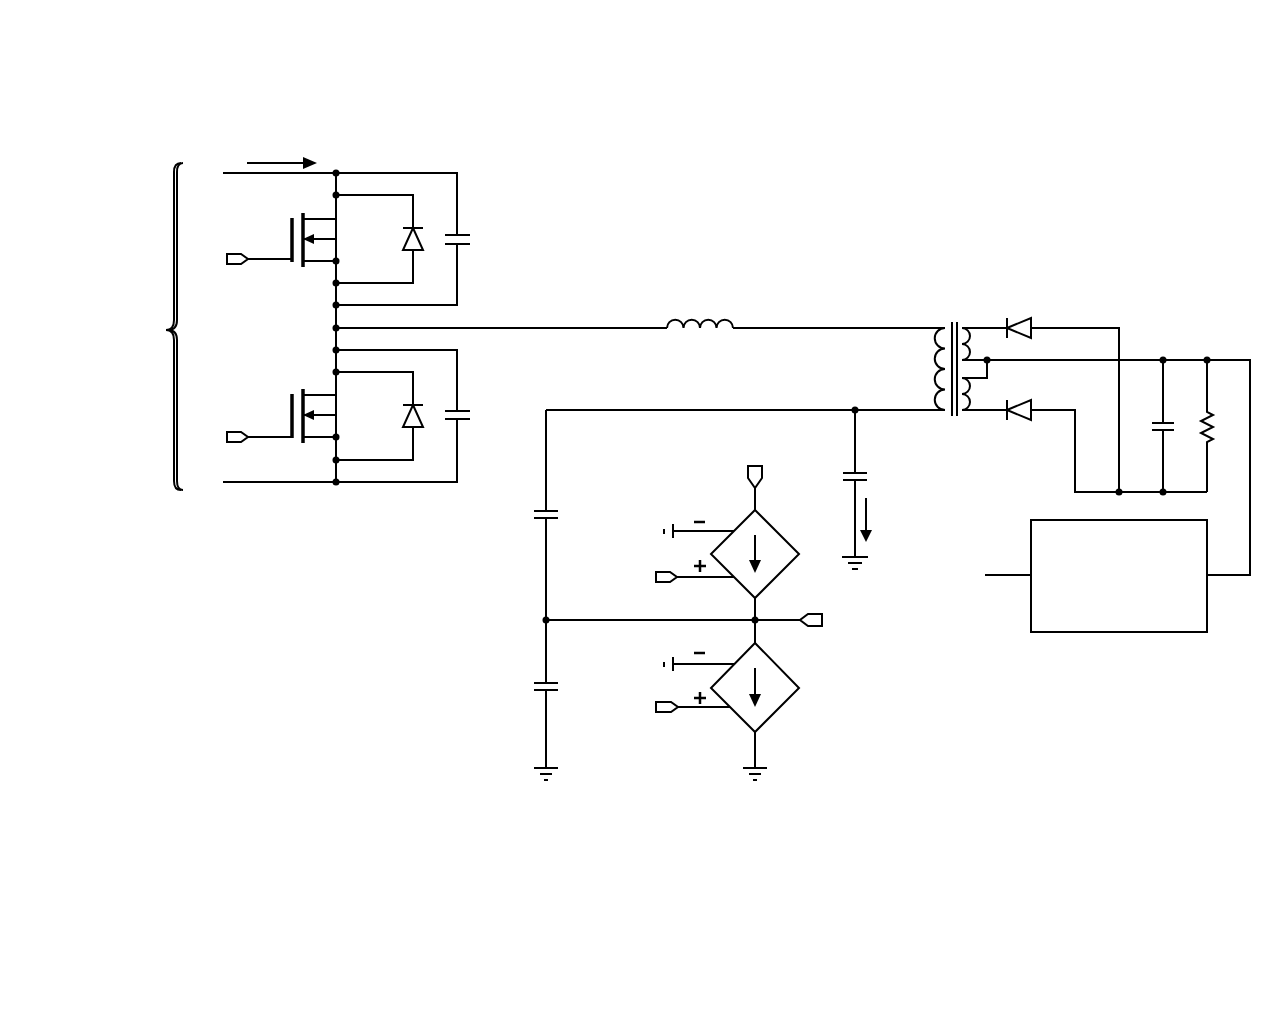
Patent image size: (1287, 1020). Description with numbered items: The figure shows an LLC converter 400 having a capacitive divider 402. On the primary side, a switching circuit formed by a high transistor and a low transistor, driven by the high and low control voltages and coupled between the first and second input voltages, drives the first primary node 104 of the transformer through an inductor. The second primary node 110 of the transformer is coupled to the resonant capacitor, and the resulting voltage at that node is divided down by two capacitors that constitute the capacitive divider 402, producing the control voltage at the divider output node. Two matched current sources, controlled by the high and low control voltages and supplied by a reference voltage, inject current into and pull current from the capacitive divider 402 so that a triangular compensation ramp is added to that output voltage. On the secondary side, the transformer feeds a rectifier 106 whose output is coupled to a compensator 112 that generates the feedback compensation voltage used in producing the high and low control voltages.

The LLC converter 400 is at (1074, 179).
The first primary node 104 is at (927, 326).
The second primary node 110 is at (922, 412).
The rectifier 106 is at (1229, 333).
The compensator 112 is at (1141, 611).
The capacitive divider 402 is at (478, 666).